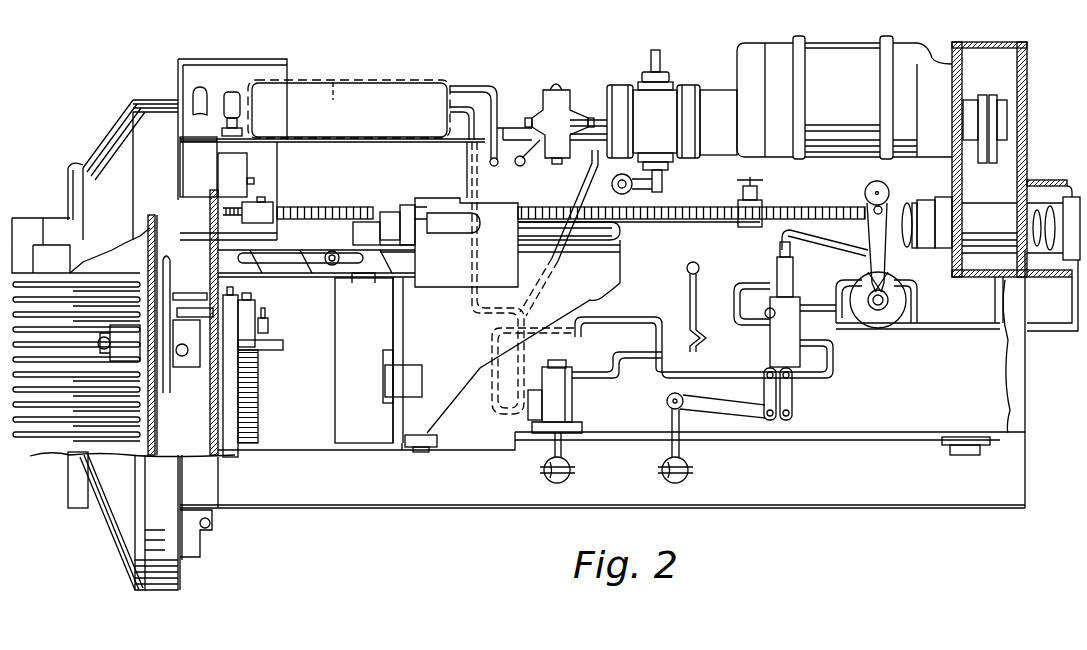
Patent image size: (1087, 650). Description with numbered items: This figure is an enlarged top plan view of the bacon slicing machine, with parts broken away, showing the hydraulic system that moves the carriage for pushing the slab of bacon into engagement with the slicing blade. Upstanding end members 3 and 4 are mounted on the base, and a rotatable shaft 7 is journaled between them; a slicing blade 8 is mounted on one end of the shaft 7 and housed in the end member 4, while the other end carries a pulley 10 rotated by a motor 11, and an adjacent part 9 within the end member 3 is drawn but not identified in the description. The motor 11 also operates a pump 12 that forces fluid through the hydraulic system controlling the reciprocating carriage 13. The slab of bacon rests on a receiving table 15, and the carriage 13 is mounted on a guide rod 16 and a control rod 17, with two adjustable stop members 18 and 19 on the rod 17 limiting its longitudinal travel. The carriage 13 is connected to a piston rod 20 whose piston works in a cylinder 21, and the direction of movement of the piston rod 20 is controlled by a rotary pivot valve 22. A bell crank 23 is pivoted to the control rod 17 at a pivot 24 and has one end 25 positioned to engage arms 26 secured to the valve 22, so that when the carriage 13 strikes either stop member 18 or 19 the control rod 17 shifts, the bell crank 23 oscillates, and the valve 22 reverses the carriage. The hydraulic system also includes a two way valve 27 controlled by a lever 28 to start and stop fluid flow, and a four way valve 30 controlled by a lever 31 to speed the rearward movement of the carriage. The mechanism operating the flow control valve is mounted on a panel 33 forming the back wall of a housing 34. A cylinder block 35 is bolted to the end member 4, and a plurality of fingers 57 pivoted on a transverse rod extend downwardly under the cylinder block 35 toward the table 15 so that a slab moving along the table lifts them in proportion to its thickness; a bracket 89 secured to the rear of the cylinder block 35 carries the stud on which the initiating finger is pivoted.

The end member 3 is at (1027, 72).
The end member 4 is at (125, 140).
The shaft 7 is at (1003, 118).
The slicing blade 8 is at (157, 238).
The gear 9 is at (984, 150).
The pulley 10 is at (1003, 98).
The motor 11 is at (830, 53).
The pump 12 is at (559, 90).
The carriage 13 is at (367, 425).
The receiving table 15 is at (472, 440).
The guide rod 16 is at (610, 234).
The control rod 17 is at (315, 206).
The stop member 18 is at (256, 216).
The stop member 19 is at (748, 222).
The piston rod 20 is at (452, 240).
The cylinder 21 is at (989, 233).
The rotary pivot valve 22 is at (890, 312).
The bell crank 23 is at (873, 228).
The pivot 24 is at (888, 200).
The end of bell crank 25 is at (920, 296).
The arms 26 is at (862, 284).
The two way valve 27 is at (566, 401).
The lever 28 is at (563, 449).
The four way valve 30 is at (780, 340).
The lever 31 is at (690, 456).
The panel 33 is at (349, 110).
The housing 34 is at (376, 80).
The cylinder block 35 is at (230, 393).
The fingers 57 is at (192, 293).
The bracket 89 is at (272, 347).